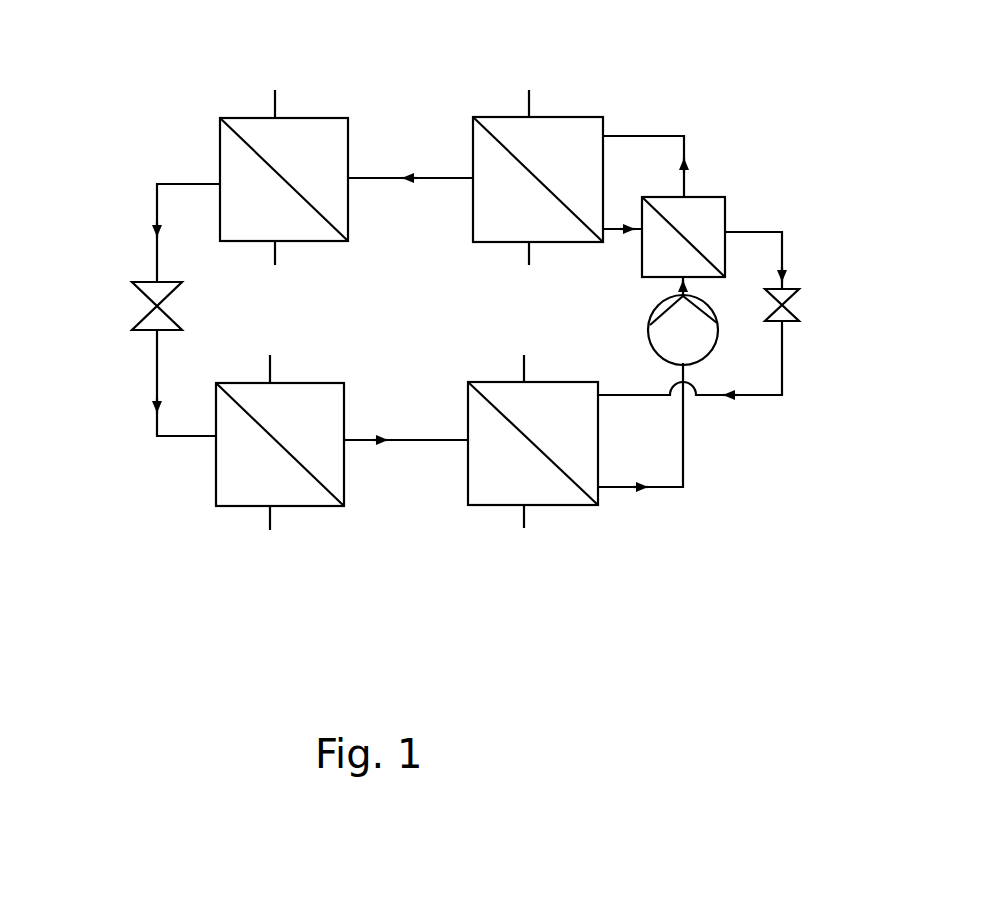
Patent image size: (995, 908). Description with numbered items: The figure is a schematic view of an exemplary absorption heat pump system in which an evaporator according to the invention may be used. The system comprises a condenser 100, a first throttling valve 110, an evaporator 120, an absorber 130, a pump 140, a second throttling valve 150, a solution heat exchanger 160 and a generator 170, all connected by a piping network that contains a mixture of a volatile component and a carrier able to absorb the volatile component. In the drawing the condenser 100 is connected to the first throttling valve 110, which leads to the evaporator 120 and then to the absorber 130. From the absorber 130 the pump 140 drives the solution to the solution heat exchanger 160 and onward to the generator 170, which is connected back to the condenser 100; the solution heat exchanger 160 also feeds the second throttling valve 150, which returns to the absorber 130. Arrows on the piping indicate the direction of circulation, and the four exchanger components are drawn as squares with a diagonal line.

The condenser 100 is at (222, 152).
The first throttling valve 110 is at (130, 282).
The evaporator 120 is at (237, 507).
The absorber 130 is at (573, 505).
The pump 140 is at (650, 325).
The second throttling valve 150 is at (799, 305).
The solution heat exchanger 160 is at (713, 197).
The generator 170 is at (577, 117).